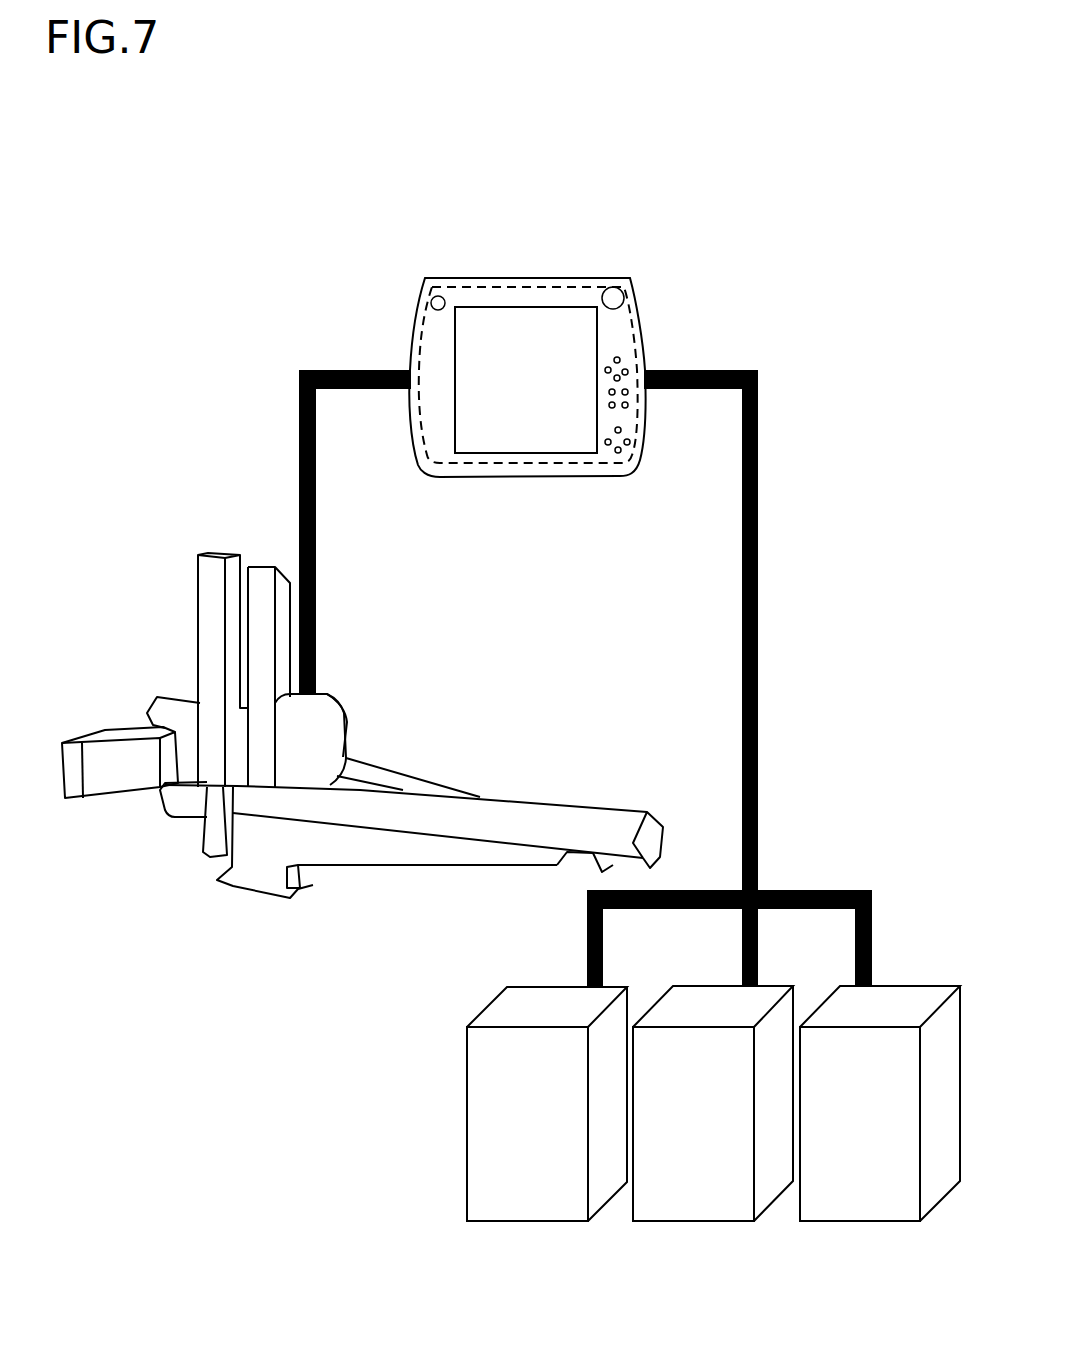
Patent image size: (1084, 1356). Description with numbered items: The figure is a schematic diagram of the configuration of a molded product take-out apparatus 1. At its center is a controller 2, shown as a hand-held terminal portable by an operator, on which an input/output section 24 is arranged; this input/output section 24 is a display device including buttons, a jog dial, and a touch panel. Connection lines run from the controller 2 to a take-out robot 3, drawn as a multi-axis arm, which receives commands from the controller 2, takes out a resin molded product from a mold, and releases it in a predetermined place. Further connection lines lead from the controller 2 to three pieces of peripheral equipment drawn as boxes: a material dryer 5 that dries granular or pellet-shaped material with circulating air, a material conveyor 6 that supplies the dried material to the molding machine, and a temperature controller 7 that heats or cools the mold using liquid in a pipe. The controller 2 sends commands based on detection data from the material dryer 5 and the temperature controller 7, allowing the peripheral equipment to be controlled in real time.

The molded product take-out apparatus 1 is at (774, 213).
The controller 2 is at (583, 278).
The input/output section 24 is at (637, 348).
The take-out robot 3 is at (573, 804).
The material dryer 5 is at (680, 995).
The material conveyor 6 is at (898, 997).
The temperature controller 7 is at (522, 995).